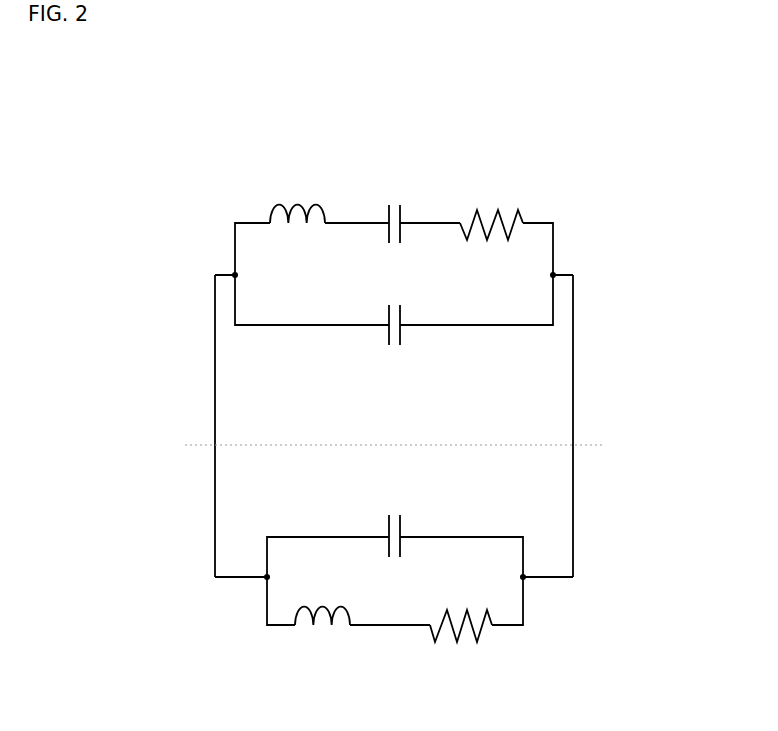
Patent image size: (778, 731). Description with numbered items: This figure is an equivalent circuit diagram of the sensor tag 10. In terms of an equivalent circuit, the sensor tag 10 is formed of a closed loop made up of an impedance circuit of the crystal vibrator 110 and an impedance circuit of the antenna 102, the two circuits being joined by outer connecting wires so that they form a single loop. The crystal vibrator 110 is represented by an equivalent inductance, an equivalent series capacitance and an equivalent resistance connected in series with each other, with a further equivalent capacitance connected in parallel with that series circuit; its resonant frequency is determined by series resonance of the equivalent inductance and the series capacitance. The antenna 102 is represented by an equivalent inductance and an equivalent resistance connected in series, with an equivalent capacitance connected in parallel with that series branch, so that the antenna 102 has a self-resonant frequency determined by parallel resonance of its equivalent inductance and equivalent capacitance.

The sensor tag 10 is at (398, 399).
The crystal vibrator 110 is at (250, 197).
The antenna 102 is at (367, 633).